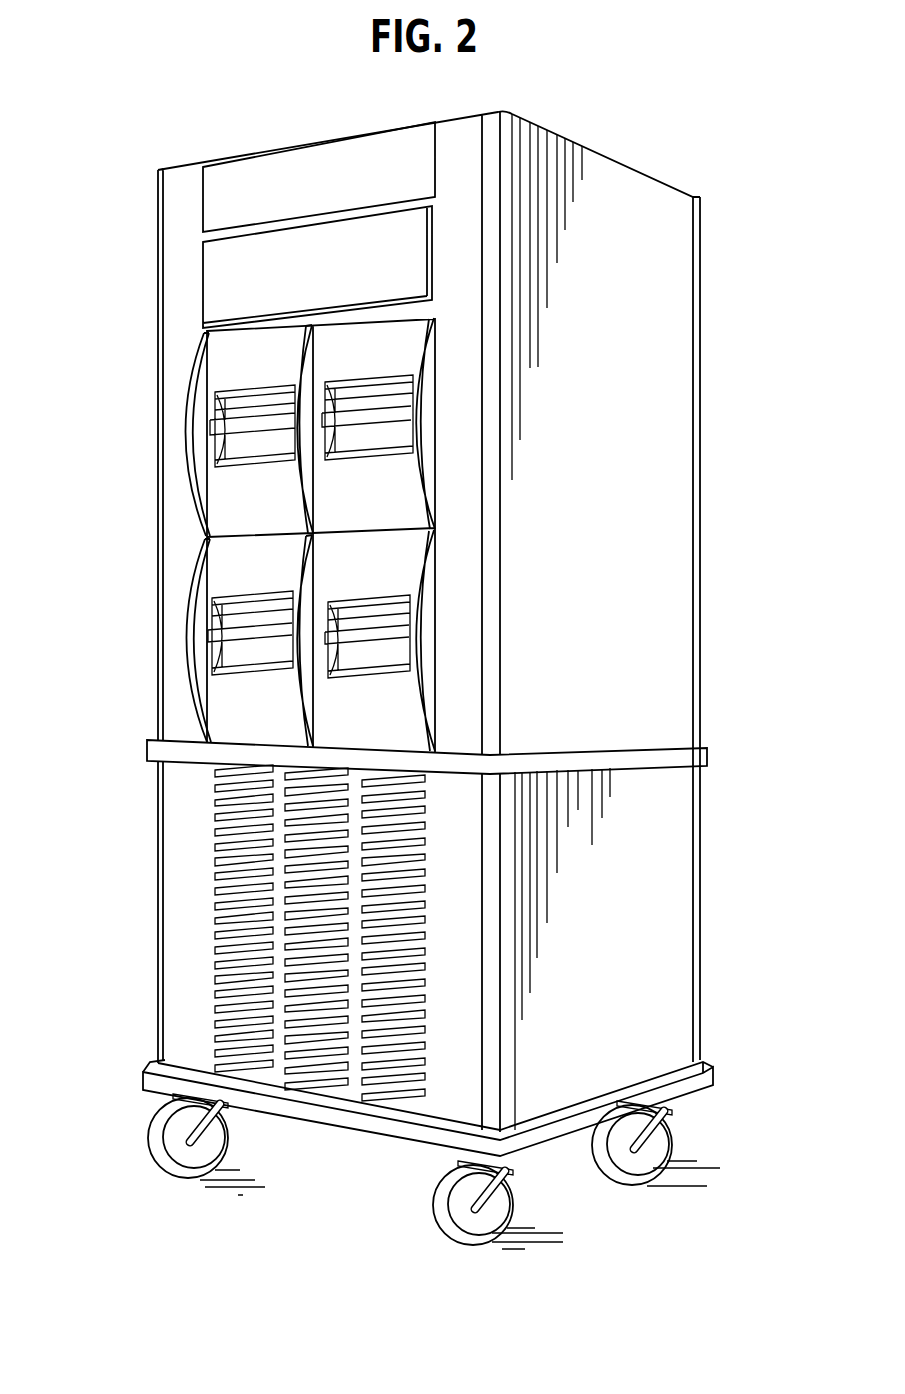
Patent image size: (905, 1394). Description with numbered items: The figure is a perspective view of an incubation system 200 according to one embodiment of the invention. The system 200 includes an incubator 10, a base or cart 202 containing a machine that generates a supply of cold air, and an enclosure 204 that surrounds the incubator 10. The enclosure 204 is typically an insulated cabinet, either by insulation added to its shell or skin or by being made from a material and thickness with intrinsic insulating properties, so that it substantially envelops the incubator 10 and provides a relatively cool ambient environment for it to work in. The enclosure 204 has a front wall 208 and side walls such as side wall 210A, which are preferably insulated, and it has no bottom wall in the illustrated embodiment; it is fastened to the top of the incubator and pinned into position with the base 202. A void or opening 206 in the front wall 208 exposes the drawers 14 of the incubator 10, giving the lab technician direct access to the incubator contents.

The incubator 10 is at (185, 547).
The drawers 14 is at (228, 372).
The incubation system 200 is at (728, 443).
The base or cart 202 is at (667, 915).
The enclosure 204 is at (662, 318).
The void or opening 206 is at (440, 396).
The front wall 208 is at (452, 487).
The side wall 210A is at (675, 597).